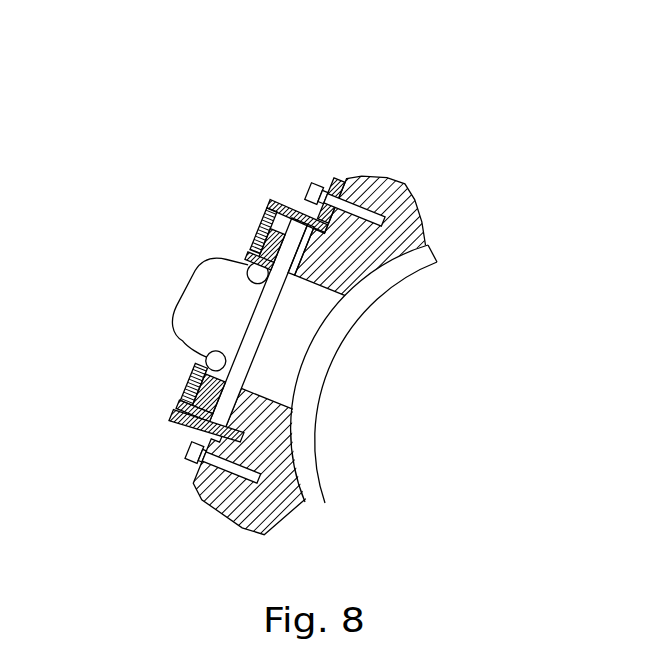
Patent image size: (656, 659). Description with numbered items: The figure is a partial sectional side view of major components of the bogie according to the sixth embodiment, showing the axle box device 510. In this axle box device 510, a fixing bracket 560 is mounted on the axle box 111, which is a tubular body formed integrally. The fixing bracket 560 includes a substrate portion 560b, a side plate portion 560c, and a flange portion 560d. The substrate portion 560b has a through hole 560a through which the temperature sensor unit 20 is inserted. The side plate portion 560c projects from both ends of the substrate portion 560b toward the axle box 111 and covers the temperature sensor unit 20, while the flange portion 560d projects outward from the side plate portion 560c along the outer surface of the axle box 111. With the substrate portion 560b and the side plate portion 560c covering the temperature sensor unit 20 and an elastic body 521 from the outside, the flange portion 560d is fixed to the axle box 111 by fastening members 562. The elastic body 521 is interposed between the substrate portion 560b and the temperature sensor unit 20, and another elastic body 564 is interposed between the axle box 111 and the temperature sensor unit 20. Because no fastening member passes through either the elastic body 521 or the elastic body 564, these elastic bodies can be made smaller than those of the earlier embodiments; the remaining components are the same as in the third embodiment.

The axle box device 510 is at (546, 113).
The axle box 111 is at (213, 500).
The temperature sensor unit 20 is at (178, 296).
The fixing bracket 560 is at (187, 383).
The through hole 560a is at (243, 262).
The substrate portion 560b is at (258, 242).
The side plate portion 560c is at (270, 210).
The flange portion 560d is at (343, 177).
The fastening members 562 is at (309, 181).
The elastic body 521 is at (182, 404).
The elastic body 564 is at (176, 418).